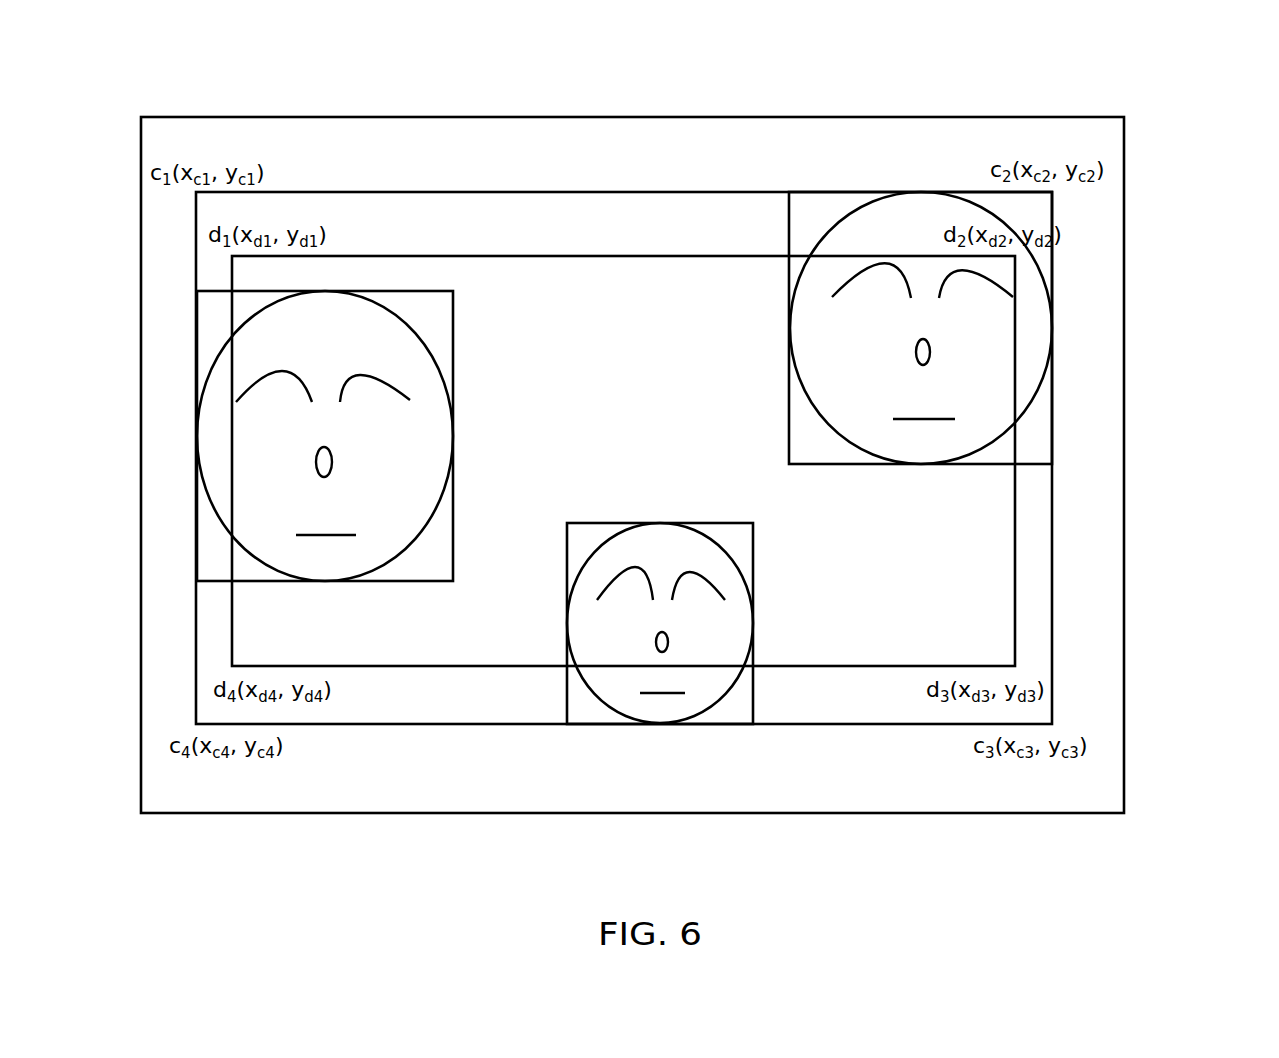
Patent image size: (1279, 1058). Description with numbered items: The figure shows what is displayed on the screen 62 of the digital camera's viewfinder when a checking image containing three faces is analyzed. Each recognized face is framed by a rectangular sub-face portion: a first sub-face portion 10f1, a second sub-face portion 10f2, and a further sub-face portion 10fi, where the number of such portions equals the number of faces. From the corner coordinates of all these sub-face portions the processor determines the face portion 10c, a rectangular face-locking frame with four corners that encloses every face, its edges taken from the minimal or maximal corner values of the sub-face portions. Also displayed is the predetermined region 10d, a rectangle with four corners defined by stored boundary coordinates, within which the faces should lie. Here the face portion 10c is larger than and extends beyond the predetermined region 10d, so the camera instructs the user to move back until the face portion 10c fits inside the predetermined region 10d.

The screen 62 is at (1125, 300).
The face portion 10c is at (1052, 613).
The predetermined region 10d is at (1015, 520).
The first sub-face portion 10f1 is at (398, 290).
The i-th sub-face portion 10fi is at (809, 228).
The second sub-face portion 10f2 is at (566, 692).